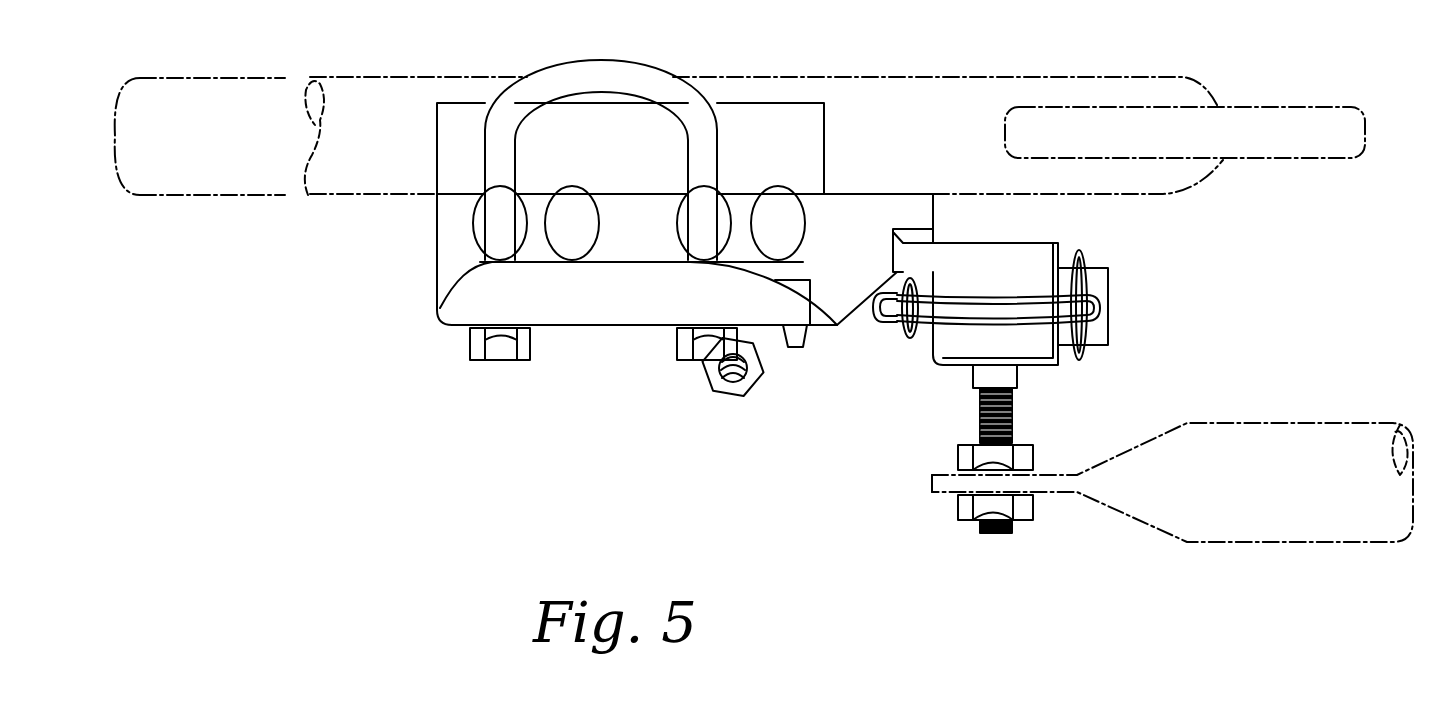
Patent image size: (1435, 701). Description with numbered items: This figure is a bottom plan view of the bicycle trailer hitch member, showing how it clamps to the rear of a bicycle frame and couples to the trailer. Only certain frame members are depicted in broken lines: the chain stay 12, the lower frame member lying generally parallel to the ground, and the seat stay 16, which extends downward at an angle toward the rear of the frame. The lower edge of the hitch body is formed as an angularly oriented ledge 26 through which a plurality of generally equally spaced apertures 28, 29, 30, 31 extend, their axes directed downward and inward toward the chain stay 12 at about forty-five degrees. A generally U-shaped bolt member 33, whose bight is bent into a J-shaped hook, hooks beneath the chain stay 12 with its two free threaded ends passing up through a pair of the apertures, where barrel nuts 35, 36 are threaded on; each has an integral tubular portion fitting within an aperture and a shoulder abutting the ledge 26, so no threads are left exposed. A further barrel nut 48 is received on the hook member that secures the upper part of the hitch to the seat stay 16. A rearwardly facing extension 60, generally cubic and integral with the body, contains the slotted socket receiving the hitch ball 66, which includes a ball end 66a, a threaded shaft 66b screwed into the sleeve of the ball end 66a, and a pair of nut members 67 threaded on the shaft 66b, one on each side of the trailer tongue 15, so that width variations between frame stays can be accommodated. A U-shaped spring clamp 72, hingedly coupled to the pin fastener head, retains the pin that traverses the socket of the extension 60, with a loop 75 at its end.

The chain stay 12 is at (397, 147).
The trailer tongue 15 is at (1273, 497).
The seat stay 16 is at (230, 147).
The ledge 26 is at (654, 237).
The aperture 28 is at (800, 224).
The aperture 29 is at (727, 214).
The aperture 30 is at (597, 218).
The aperture 31 is at (478, 212).
The U-shaped bolt member 33 is at (643, 66).
The barrel nut 35 is at (680, 348).
The barrel nut 36 is at (500, 360).
The barrel nut 48 is at (734, 384).
The rearwardly facing extension 60 is at (980, 282).
The hitch ball 66 is at (1004, 447).
The ball end 66a is at (973, 380).
The threaded shaft 66b is at (980, 430).
The nut members 67 is at (1033, 457).
The U-shaped spring clamp 72 is at (948, 323).
The clip loop 75 is at (1108, 312).